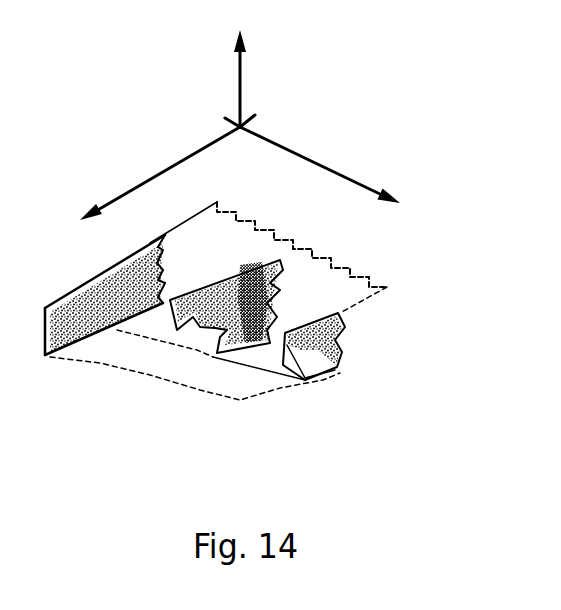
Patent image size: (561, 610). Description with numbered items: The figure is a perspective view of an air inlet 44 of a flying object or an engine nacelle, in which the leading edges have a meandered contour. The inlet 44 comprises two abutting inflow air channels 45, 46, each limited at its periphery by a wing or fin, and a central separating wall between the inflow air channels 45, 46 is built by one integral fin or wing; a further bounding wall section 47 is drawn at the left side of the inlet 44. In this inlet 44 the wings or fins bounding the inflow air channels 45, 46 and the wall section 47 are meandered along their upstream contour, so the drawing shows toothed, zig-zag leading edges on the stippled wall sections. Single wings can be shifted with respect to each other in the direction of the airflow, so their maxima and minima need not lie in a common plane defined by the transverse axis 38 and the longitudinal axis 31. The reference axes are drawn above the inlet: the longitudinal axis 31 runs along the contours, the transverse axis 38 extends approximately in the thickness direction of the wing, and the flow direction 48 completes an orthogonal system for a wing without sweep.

The longitudinal axis 31 is at (320, 165).
The transverse axis 38 is at (250, 78).
The flow direction 48 is at (160, 173).
The air inlet 44 is at (218, 340).
The inflow air channel 45 is at (223, 369).
The inflow air channel 46 is at (305, 393).
The left block structure 47 is at (105, 295).